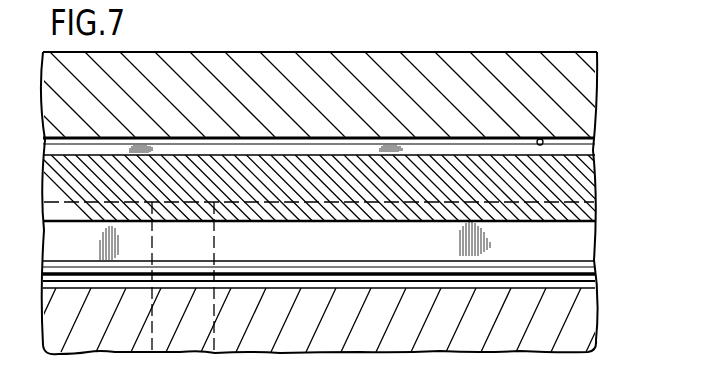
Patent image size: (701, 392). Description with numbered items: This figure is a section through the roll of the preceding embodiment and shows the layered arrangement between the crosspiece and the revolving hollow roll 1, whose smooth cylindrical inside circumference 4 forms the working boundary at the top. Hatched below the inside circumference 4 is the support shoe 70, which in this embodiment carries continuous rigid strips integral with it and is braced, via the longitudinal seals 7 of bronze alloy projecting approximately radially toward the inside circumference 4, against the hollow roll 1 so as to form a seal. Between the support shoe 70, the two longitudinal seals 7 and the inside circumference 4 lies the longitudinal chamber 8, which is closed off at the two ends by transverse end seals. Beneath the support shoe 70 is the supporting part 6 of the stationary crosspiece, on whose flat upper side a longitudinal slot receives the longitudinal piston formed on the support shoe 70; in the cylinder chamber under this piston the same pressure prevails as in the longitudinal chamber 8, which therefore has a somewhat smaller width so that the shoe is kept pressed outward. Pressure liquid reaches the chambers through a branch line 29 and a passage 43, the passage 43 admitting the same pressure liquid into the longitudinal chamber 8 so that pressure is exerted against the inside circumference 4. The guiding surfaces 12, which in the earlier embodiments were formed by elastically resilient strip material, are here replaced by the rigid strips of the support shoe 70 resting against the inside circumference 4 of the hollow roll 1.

The hollow roll 1 is at (477, 80).
The inside circumference 4 is at (545, 139).
The supporting part 6 is at (570, 322).
The longitudinal seals 7 is at (583, 147).
The longitudinal chamber 8 is at (176, 140).
The guiding surfaces 12 is at (137, 297).
The branch line 29 is at (213, 334).
The passage 43 is at (215, 245).
The support shoe 70 is at (578, 172).